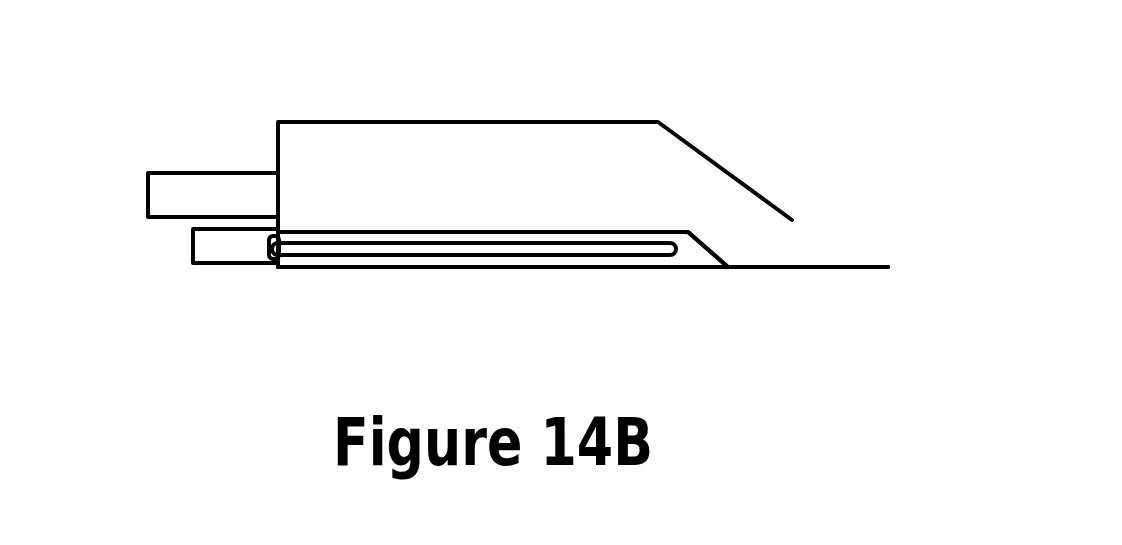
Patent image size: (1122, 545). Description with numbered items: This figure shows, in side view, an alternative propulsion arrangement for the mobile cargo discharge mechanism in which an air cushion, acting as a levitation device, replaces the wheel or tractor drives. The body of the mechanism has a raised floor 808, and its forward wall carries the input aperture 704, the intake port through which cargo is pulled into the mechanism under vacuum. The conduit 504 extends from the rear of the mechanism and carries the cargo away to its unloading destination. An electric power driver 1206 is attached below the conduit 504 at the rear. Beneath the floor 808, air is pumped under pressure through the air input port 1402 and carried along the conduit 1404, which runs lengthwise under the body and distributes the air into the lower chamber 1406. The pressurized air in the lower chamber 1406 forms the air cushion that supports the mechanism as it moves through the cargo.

The conduit 504 is at (254, 192).
The floor 808 is at (533, 218).
The input aperture 704 is at (793, 243).
The electric power driver 1206 is at (232, 256).
The air input port 1402 is at (272, 262).
The conduit 1404 is at (497, 245).
The lower chamber 1406 is at (694, 250).